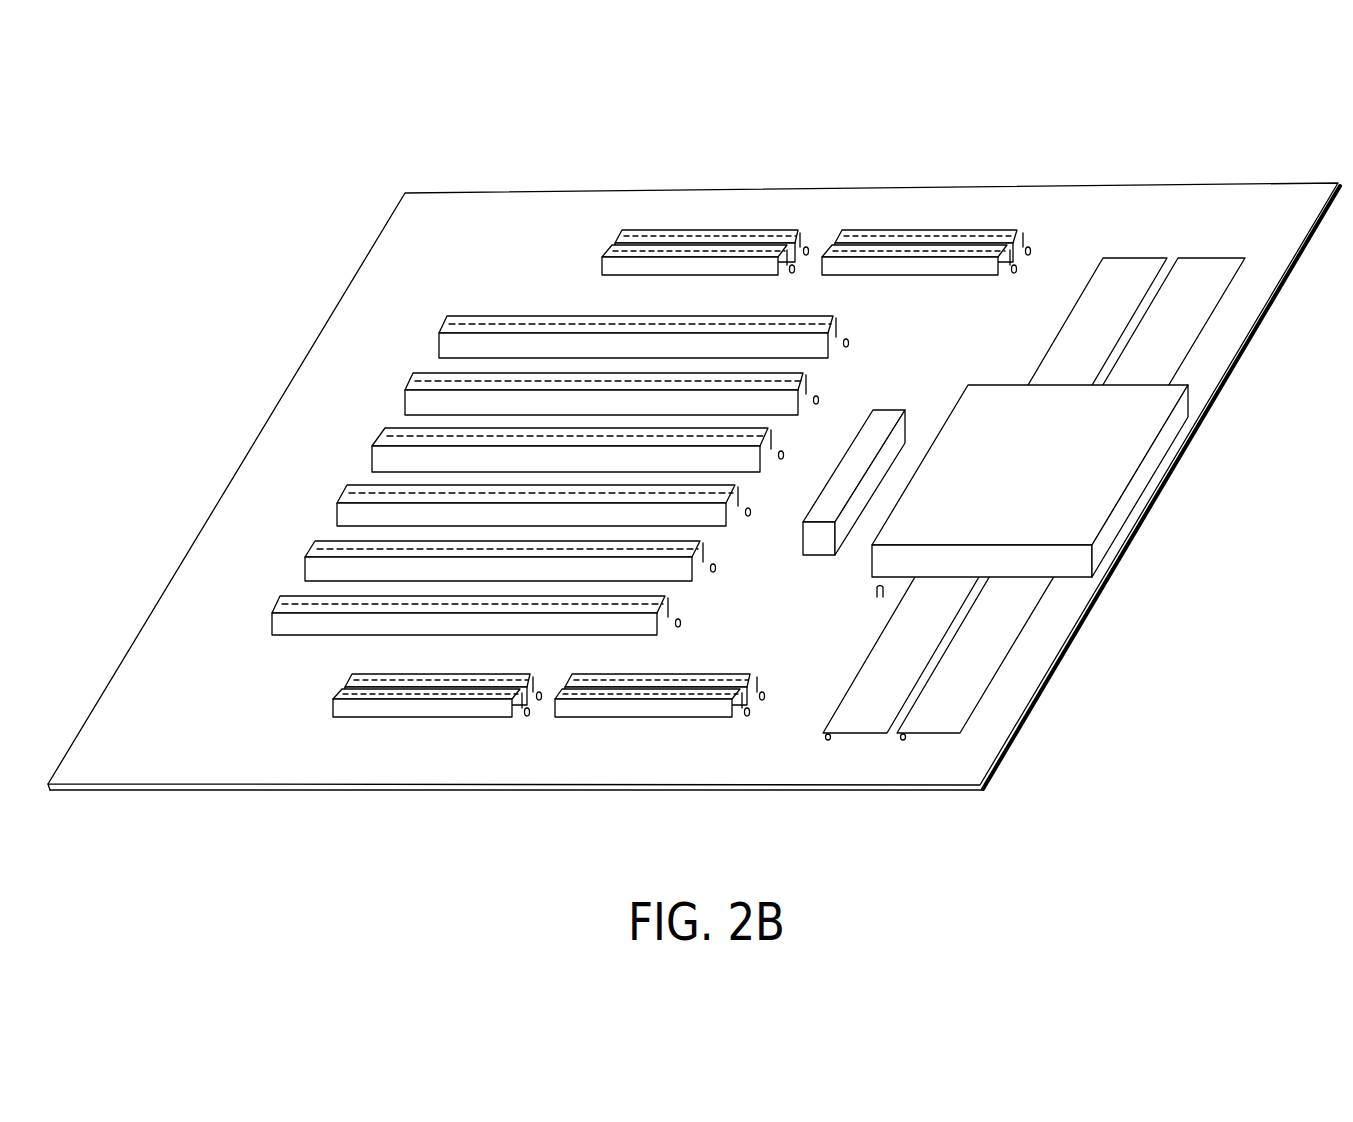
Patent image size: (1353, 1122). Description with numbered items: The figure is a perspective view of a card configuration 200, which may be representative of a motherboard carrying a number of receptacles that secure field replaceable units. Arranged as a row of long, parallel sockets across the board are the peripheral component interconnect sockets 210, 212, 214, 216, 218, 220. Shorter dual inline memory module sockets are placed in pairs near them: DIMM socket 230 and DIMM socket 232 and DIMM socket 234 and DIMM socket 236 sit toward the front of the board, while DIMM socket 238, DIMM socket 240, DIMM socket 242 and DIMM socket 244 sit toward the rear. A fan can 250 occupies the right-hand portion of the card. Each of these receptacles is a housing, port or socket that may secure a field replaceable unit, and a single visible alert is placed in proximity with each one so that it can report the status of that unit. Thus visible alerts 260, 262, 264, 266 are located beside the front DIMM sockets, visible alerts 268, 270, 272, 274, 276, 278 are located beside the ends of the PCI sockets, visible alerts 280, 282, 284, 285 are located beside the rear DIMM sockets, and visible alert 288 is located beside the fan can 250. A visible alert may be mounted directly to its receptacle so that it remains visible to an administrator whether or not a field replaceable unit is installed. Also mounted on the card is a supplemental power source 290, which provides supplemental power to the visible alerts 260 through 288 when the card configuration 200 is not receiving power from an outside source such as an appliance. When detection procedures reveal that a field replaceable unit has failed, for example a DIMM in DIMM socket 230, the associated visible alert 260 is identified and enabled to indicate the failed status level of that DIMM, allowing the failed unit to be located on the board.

The card configuration 200 is at (914, 111).
The peripheral component interconnect socket 210 is at (280, 598).
The peripheral component interconnect socket 212 is at (315, 546).
The peripheral component interconnect socket 214 is at (342, 492).
The peripheral component interconnect socket 216 is at (385, 433).
The peripheral component interconnect socket 218 is at (408, 382).
The peripheral component interconnect socket 220 is at (445, 321).
The dual inline memory module socket 230 is at (342, 693).
The dual inline memory module socket 232 is at (352, 675).
The dual inline memory module socket 234 is at (556, 717).
The dual inline memory module socket 236 is at (573, 675).
The dual inline memory module socket 238 is at (612, 250).
The dual inline memory module socket 240 is at (621, 231).
The dual inline memory module socket 242 is at (823, 274).
The dual inline memory module socket 244 is at (843, 231).
The fan can 250 is at (1083, 467).
The visible alert 260 is at (528, 715).
The visible alert 262 is at (541, 692).
The visible alert 264 is at (748, 715).
The visible alert 266 is at (764, 692).
The visible alert 268 is at (681, 626).
The visible alert 270 is at (716, 571).
The visible alert 272 is at (751, 515).
The visible alert 274 is at (784, 458).
The visible alert 276 is at (819, 403).
The visible alert 278 is at (849, 346).
The visible alert 280 is at (793, 273).
The visible alert 282 is at (808, 247).
The visible alert 284 is at (1015, 273).
The visible alert 285 is at (1030, 247).
The visible alert 288 is at (876, 592).
The supplemental power source 290 is at (885, 407).